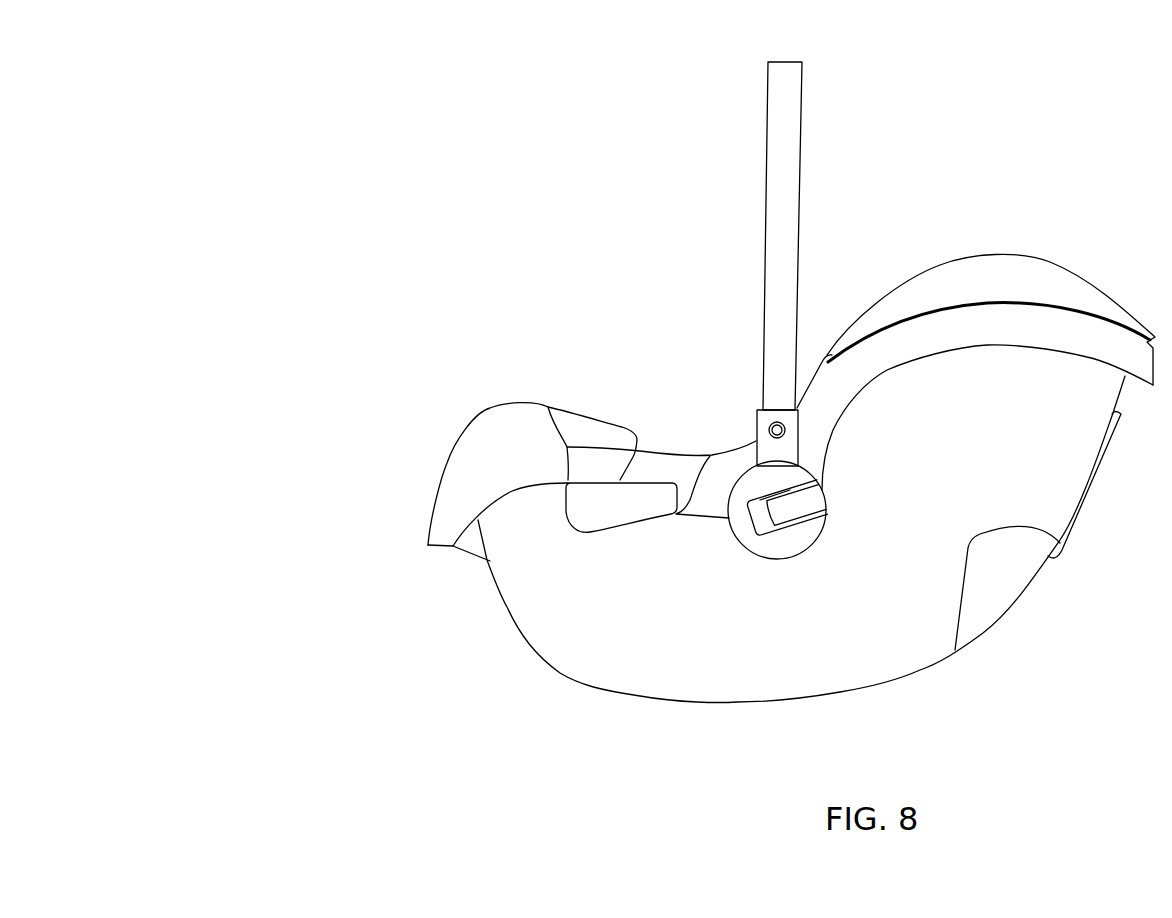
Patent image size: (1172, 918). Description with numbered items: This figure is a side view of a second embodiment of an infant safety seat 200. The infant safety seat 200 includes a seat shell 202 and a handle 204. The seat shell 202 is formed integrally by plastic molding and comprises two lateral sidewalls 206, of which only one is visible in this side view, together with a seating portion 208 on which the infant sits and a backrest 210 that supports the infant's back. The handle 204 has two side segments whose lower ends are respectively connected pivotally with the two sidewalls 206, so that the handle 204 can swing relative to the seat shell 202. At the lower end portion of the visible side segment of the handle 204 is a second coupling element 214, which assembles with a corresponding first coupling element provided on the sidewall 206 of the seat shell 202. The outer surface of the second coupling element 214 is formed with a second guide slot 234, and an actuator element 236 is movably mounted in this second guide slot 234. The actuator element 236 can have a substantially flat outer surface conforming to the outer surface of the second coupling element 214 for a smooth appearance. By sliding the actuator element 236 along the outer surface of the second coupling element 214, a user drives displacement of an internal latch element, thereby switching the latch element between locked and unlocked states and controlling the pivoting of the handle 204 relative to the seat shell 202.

The infant safety seat 200 is at (278, 57).
The seat shell 202 is at (612, 663).
The handle 204 is at (790, 128).
The sidewall 206 is at (820, 400).
The seating portion 208 is at (637, 397).
The backrest 210 is at (993, 248).
The second coupling element 214 is at (790, 545).
The second guide slot 234 is at (752, 518).
The actuator element 236 is at (793, 507).